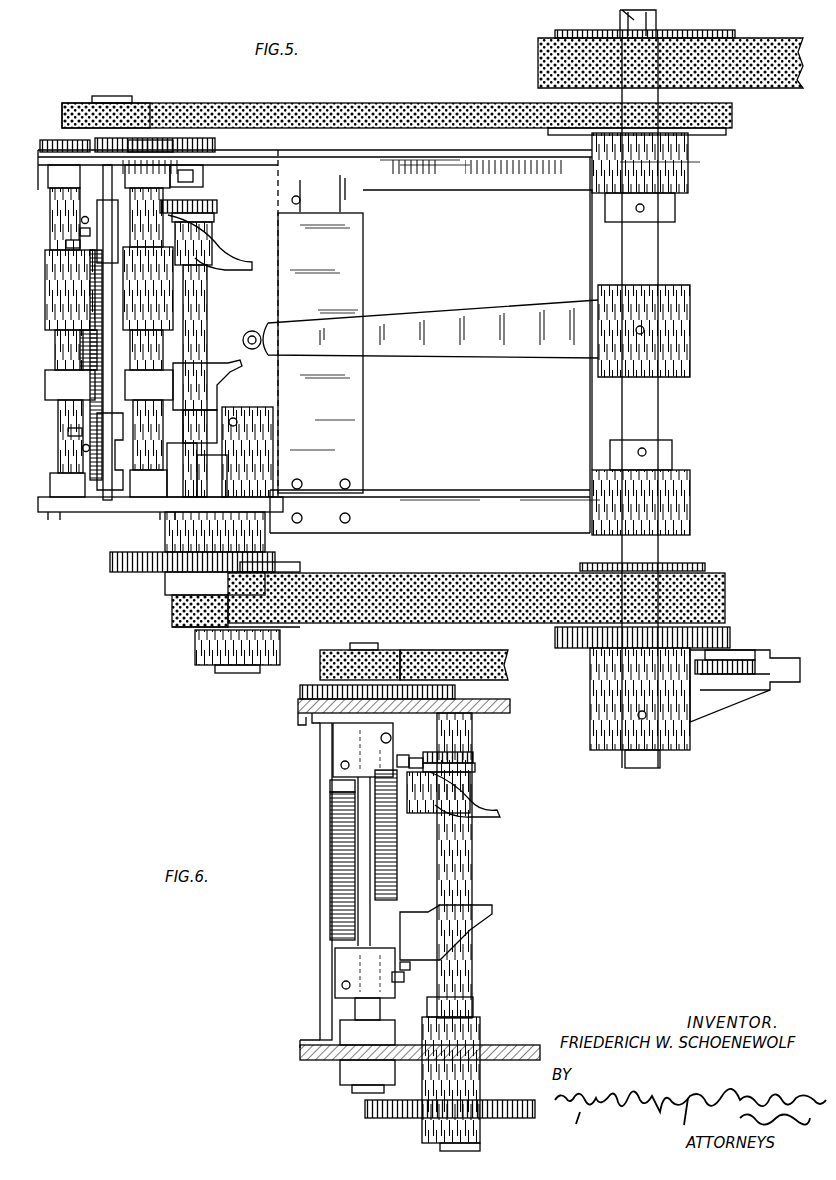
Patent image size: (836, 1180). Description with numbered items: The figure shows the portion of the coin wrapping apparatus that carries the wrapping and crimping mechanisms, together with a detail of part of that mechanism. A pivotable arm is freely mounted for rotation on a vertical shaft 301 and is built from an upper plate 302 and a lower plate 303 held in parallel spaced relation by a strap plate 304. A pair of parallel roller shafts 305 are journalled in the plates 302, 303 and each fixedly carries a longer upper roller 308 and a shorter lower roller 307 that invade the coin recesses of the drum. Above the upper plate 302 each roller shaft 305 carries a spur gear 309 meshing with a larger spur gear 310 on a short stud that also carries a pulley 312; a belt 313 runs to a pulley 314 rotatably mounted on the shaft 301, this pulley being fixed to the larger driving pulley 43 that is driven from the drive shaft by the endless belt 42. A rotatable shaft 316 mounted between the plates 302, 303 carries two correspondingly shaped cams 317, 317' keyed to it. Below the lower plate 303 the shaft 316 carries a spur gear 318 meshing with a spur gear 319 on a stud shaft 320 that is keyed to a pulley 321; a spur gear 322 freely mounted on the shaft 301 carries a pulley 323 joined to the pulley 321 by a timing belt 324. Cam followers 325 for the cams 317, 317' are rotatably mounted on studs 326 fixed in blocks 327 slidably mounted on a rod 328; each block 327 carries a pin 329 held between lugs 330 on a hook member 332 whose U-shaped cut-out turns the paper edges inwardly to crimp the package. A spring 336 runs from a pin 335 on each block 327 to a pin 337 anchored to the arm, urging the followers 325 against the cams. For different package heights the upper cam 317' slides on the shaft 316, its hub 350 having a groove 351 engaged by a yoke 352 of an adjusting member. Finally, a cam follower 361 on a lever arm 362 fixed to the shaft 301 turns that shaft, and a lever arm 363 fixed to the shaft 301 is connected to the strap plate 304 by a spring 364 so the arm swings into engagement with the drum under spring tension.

In FIG. 5, the endless belt 42 is at (538, 63).
In FIG. 5, the driving pulley 43 is at (722, 33).
In FIG. 5, the vertical shaft 301 is at (659, 247).
In FIG. 5, the upper plate 302 is at (444, 160).
In FIG. 6, the upper plate 302 is at (498, 703).
In FIG. 5, the lower plate 303 is at (98, 513).
In FIG. 6, the lower plate 303 is at (318, 1062).
In FIG. 5, the strap plate 304 is at (363, 287).
In FIG. 5, the roller shaft 305 is at (190, 182).
In FIG. 5, the lower roller 307 is at (109, 413).
In FIG. 5, the upper roller 308 is at (109, 288).
In FIG. 5, the spur gear 309 is at (45, 140).
In FIG. 5, the larger spur gear 310 is at (112, 138).
In FIG. 6, the larger spur gear 310 is at (300, 691).
In FIG. 5, the pulley 312 is at (68, 104).
In FIG. 6, the pulley 312 is at (322, 658).
In FIG. 5, the belt 313 is at (318, 110).
In FIG. 6, the belt 313 is at (465, 660).
In FIG. 5, the pulley 314 is at (719, 136).
In FIG. 5, the rotatable shaft 316 is at (208, 302).
In FIG. 6, the rotatable shaft 316 is at (452, 872).
In FIG. 5, the cam 317 is at (215, 401).
In FIG. 6, the cam 317 is at (460, 932).
In FIG. 5, the cam 317' is at (216, 248).
In FIG. 6, the cam 317' is at (474, 803).
In FIG. 5, the spur gear 318 is at (126, 572).
In FIG. 6, the spur gear 318 is at (380, 1118).
In FIG. 5, the spur gear 319 is at (285, 569).
In FIG. 5, the stud shaft 320 is at (237, 670).
In FIG. 5, the pulley 321 is at (176, 630).
In FIG. 5, the spur gear 322 is at (570, 649).
In FIG. 5, the pulley 323 is at (706, 565).
In FIG. 5, the timing belt 324 is at (473, 576).
In FIG. 6, the cam follower 325 is at (402, 755).
In FIG. 6, the stud 326 is at (424, 760).
In FIG. 6, the block 327 is at (340, 742).
In FIG. 6, the rod 328 is at (357, 1008).
In FIG. 5, the pin 329 is at (81, 220).
In FIG. 6, the pin 329 is at (341, 766).
In FIG. 5, the lug 330 is at (66, 243).
In FIG. 5, the hook member 332 is at (80, 231).
In FIG. 6, the pin 335 is at (320, 952).
In FIG. 5, the spring 336 is at (80, 352).
In FIG. 6, the spring 336 is at (332, 862).
In FIG. 6, the pin 337 is at (332, 781).
In FIG. 5, the hub 350 is at (213, 245).
In FIG. 6, the hub 350 is at (472, 792).
In FIG. 5, the groove 351 is at (215, 220).
In FIG. 6, the groove 351 is at (476, 769).
In FIG. 5, the yoke 352 is at (218, 208).
In FIG. 6, the yoke 352 is at (474, 757).
In FIG. 5, the cam follower 361 is at (740, 660).
In FIG. 5, the lever arm 362 is at (768, 694).
In FIG. 5, the lever arm 363 is at (546, 360).
In FIG. 5, the spring 364 is at (246, 334).